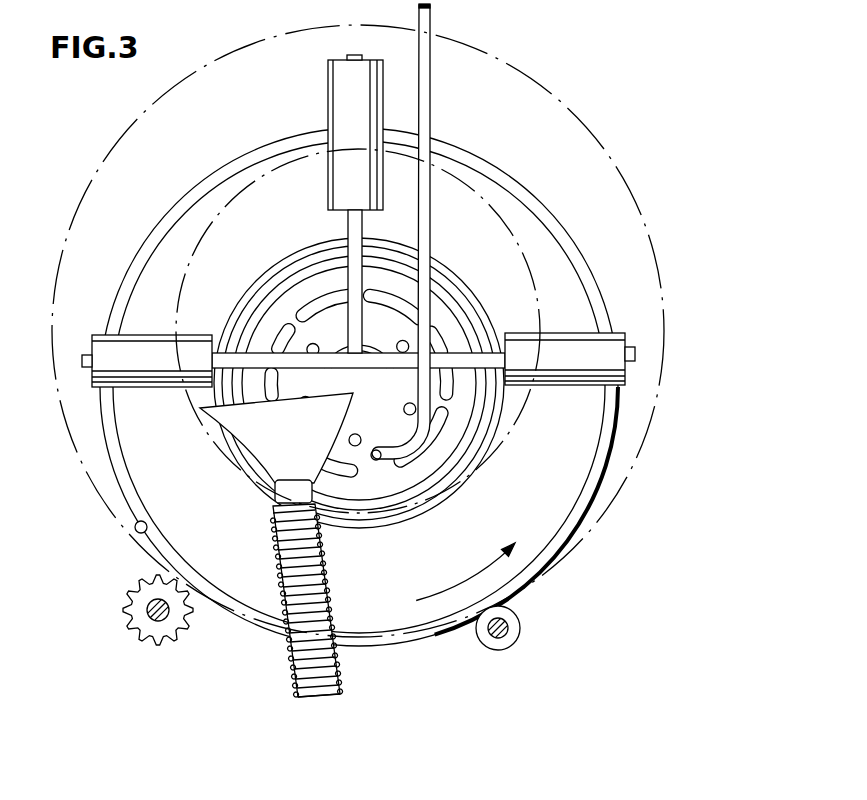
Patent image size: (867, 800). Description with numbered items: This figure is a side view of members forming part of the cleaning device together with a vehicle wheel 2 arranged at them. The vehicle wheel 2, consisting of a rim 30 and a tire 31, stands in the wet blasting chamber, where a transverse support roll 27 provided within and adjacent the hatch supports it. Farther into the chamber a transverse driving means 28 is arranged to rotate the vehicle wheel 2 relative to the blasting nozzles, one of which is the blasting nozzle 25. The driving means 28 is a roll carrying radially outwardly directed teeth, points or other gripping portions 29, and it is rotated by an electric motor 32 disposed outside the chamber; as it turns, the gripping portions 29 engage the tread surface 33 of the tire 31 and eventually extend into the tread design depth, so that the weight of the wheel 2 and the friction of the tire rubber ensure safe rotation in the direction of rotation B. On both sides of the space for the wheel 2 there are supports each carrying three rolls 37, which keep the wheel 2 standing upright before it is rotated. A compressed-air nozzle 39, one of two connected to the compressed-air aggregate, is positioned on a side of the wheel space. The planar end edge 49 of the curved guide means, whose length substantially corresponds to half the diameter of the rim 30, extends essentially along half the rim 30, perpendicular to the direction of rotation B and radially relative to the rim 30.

The vehicle wheel 2 is at (590, 124).
The blasting nozzle 25 is at (235, 457).
The transverse support roll 27 is at (520, 636).
The transverse driving means 28 is at (183, 632).
The gripping portions 29 is at (158, 641).
The rim 30 is at (450, 325).
The tire 31 is at (600, 432).
The electric motor 32 is at (150, 620).
The tread surface 33 is at (130, 524).
The rolls 37 is at (347, 118).
The compressed-air nozzle 39 is at (380, 458).
The planar end edge 49 is at (215, 392).
The direction of rotation B is at (462, 583).